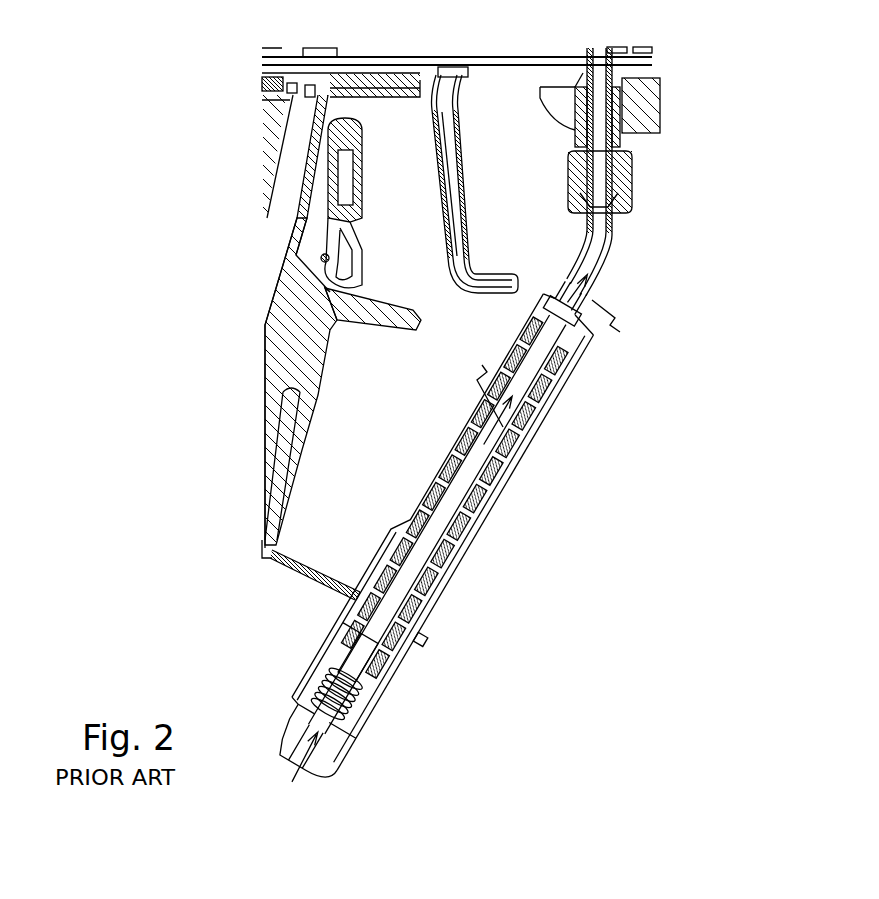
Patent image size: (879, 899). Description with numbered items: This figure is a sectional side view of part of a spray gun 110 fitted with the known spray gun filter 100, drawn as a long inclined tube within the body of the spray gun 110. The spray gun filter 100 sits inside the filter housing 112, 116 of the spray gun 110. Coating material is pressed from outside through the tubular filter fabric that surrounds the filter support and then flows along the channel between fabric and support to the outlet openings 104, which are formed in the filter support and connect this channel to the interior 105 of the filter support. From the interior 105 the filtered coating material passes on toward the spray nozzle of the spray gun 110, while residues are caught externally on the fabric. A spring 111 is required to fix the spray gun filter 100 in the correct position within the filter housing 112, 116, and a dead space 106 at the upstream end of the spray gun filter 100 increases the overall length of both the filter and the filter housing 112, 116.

The spray gun filter 100 is at (565, 363).
The outlet openings 104 is at (520, 450).
The interior of the filter support 105 is at (477, 497).
The dead space 106 is at (362, 660).
The spray gun 110 is at (390, 424).
The spring 111 is at (353, 710).
The filter housing 112 is at (310, 680).
The filter housing 116 is at (470, 420).